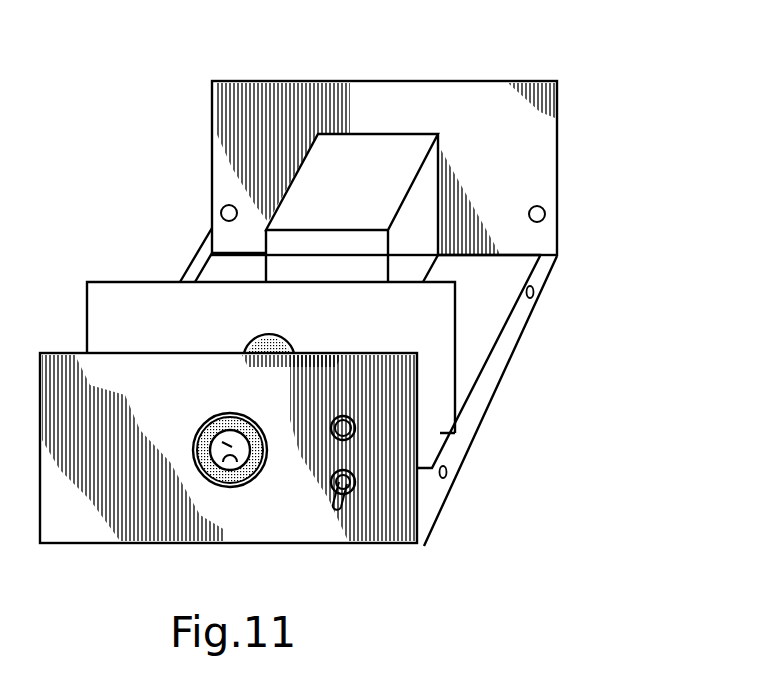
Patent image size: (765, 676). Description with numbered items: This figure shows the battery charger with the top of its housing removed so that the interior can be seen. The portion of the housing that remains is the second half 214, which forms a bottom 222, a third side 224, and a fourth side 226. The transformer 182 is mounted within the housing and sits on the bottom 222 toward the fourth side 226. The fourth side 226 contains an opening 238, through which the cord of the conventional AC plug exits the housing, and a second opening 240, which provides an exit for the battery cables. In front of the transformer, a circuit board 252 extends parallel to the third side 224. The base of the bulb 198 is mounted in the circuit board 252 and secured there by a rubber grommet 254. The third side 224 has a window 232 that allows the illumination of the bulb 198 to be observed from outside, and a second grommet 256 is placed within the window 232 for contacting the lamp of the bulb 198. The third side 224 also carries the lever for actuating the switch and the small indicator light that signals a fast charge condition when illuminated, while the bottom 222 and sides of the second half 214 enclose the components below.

The transformer 182 is at (350, 152).
The fourth side 226 is at (490, 103).
The second opening 240 is at (222, 211).
The opening 238 is at (545, 209).
The circuit board 252 is at (433, 302).
The rubber grommet 254 is at (262, 338).
The bottom 222 is at (473, 357).
The second grommet 256 is at (193, 432).
The bulb 198 is at (222, 418).
The window 232 is at (223, 489).
The second half 214 is at (88, 543).
The third side 224 is at (313, 518).